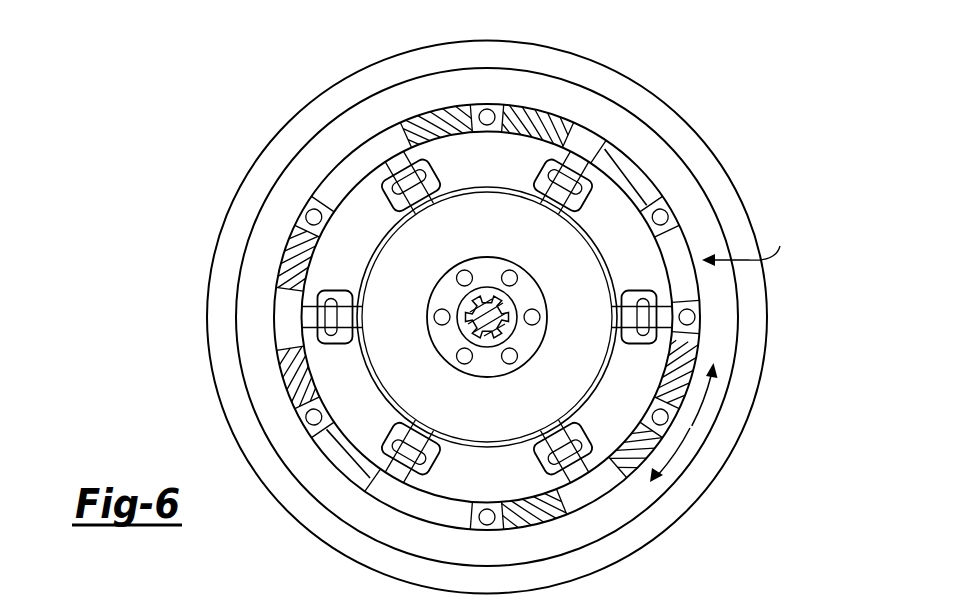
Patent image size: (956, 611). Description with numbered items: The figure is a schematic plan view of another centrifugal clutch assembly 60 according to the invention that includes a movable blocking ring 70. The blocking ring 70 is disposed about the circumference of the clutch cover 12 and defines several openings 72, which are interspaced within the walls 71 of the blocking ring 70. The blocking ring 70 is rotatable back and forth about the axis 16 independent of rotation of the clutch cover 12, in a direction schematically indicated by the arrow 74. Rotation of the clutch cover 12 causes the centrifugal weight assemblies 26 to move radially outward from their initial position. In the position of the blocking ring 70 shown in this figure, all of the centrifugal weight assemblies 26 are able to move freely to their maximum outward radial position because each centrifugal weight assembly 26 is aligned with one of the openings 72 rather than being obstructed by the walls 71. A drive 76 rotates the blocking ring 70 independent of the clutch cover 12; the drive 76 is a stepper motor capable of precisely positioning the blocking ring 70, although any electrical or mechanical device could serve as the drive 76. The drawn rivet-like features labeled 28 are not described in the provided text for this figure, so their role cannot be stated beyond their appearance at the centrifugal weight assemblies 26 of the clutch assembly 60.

The clutch assembly 60 is at (208, 111).
The clutch cover 12 is at (730, 198).
The blocking ring 70 is at (623, 138).
The walls 71 is at (633, 176).
The openings 72 is at (748, 243).
The arrow 74 is at (703, 430).
The rivet 28 is at (403, 183).
The centrifugal weight assemblies 26 is at (583, 201).
The drive 76 is at (444, 346).
The axis 16 is at (483, 308).